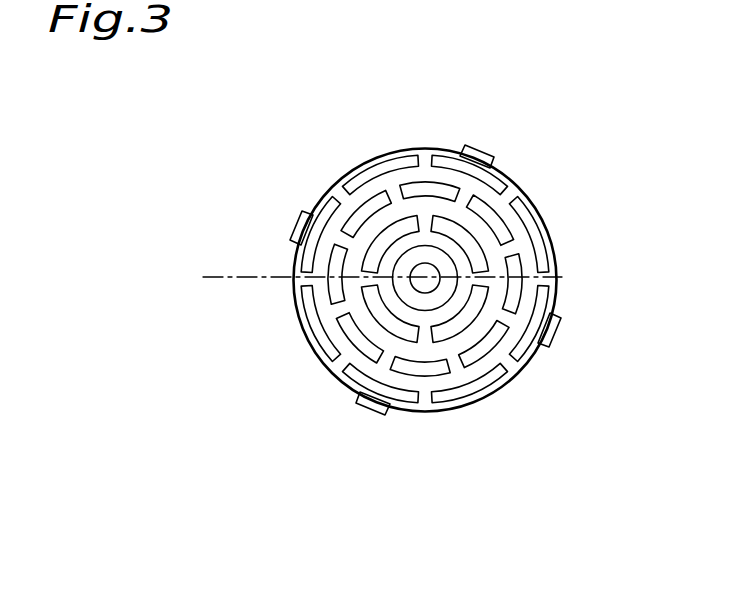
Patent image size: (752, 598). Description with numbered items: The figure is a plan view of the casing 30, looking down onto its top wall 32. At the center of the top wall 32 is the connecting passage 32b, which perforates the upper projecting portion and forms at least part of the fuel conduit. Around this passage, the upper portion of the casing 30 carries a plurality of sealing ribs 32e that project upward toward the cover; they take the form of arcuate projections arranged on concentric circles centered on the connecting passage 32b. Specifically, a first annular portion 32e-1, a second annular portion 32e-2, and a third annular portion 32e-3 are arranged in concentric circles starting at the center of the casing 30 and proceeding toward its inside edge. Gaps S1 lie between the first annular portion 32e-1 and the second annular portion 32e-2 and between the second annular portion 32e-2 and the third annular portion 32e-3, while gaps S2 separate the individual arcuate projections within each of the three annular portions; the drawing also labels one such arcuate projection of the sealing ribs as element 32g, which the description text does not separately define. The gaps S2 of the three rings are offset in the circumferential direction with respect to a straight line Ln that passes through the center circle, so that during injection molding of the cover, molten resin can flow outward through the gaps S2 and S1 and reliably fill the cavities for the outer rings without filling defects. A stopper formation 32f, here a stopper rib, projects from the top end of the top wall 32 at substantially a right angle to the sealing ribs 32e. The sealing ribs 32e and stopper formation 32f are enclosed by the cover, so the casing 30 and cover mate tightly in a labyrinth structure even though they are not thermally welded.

The casing 30 is at (553, 213).
The top wall 32 is at (552, 262).
The connecting passage 32b is at (428, 275).
The slot 32g is at (438, 192).
The stopper formation 32f is at (560, 329).
The sealing ribs 32e is at (349, 514).
The first annular portion 32e-1 is at (411, 326).
The second annular portion 32e-2 is at (408, 366).
The third annular portion 32e-3 is at (440, 399).
The gaps S1 is at (370, 231).
The gaps S2 is at (397, 196).
The straight line Ln is at (247, 275).